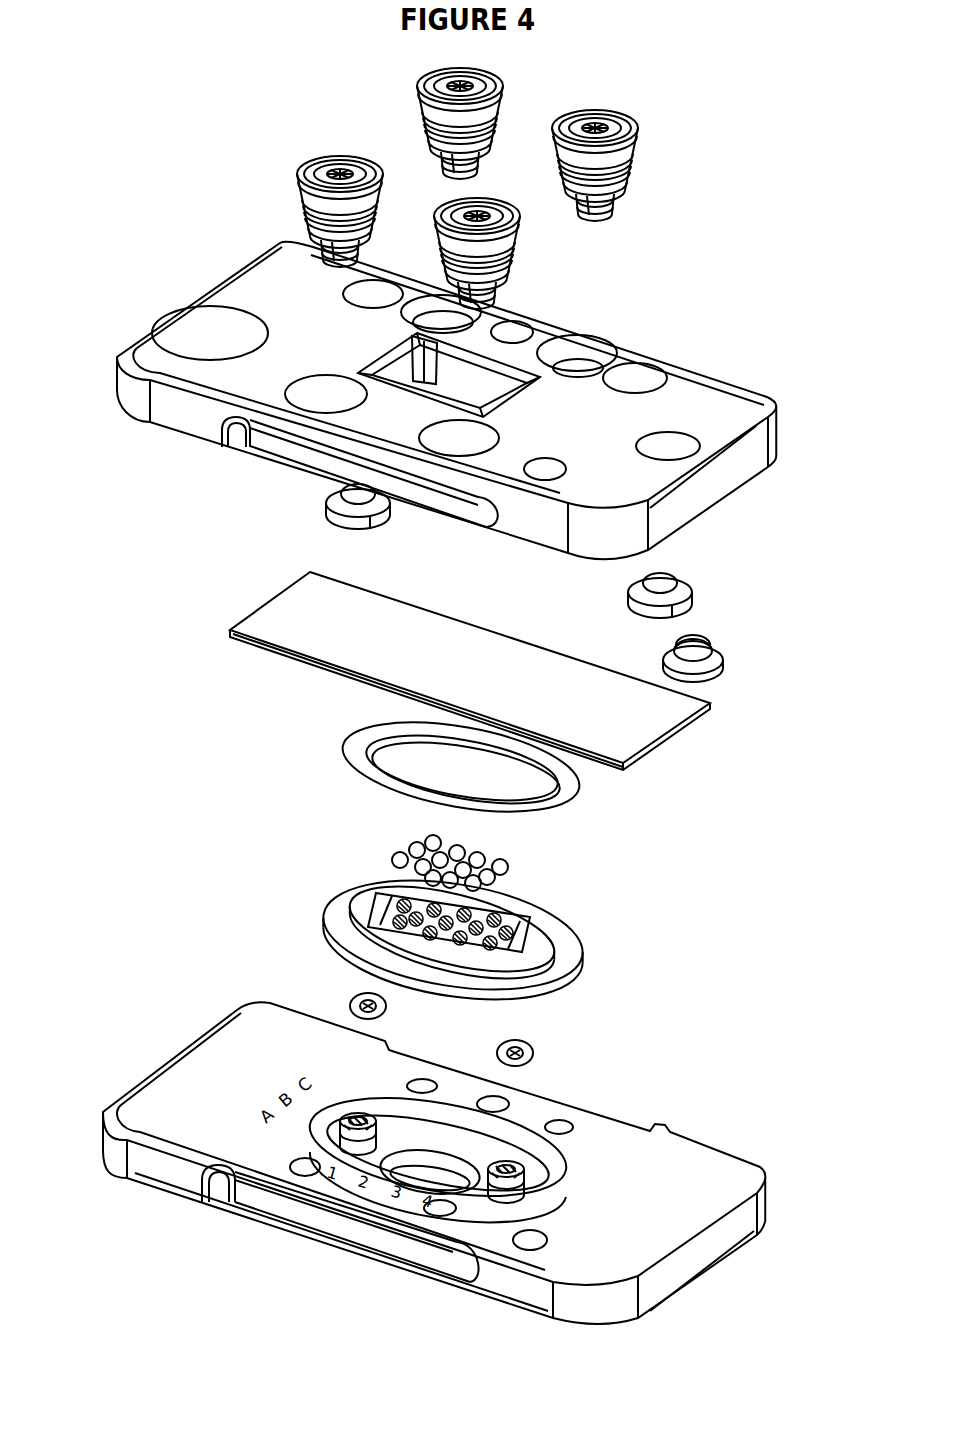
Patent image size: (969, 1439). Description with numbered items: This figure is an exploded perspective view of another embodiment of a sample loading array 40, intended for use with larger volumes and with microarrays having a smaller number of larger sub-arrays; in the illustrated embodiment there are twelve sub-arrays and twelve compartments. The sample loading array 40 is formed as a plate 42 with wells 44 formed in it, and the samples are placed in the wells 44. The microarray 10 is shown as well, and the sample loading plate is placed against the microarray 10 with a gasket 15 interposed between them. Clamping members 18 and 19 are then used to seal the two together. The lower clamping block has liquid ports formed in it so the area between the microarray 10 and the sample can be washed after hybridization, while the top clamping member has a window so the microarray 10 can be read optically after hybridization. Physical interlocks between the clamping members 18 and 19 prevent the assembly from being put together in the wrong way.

The clamping member 18 is at (638, 133).
The clamping member 19 is at (518, 250).
The microarray 10 is at (710, 703).
The gasket 15 is at (572, 807).
The sample loading array 40 is at (472, 901).
The plate 42 is at (352, 897).
The wells 44 is at (528, 916).